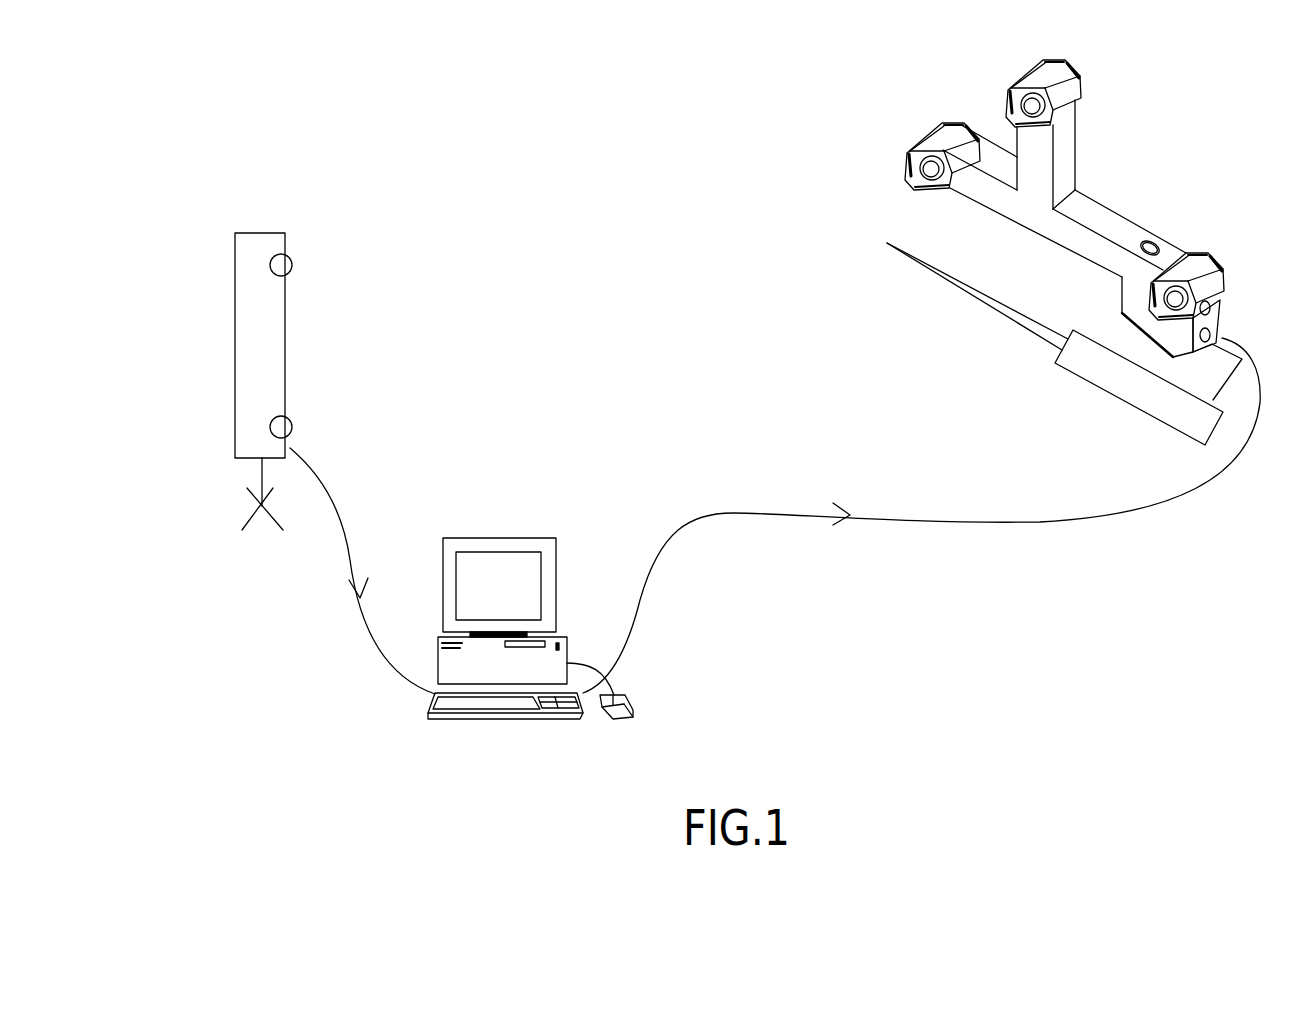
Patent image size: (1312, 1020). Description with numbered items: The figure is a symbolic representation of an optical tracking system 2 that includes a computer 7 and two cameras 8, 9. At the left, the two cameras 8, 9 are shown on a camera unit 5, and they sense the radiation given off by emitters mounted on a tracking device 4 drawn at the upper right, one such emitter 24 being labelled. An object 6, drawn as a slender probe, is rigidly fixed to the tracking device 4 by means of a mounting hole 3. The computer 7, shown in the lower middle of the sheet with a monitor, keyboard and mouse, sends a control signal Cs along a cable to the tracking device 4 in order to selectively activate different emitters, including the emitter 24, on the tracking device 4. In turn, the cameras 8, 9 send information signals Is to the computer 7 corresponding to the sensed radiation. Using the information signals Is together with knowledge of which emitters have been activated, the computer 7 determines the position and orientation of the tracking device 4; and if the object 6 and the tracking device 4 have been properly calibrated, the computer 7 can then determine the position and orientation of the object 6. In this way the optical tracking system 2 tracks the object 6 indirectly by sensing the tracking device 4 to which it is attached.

The optical tracking system 2 is at (387, 177).
The mounting hole 3 is at (1212, 337).
The tracking device 4 is at (1098, 155).
The camera unit 5 is at (208, 462).
The object 6 is at (1038, 356).
The computer 7 is at (517, 725).
The camera 8 is at (293, 267).
The camera 9 is at (293, 427).
The emitter 24 is at (932, 181).